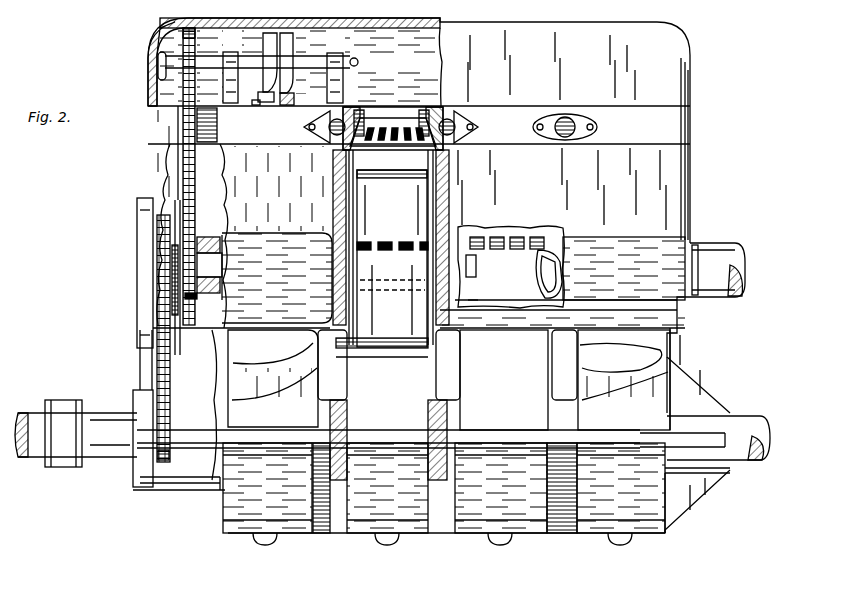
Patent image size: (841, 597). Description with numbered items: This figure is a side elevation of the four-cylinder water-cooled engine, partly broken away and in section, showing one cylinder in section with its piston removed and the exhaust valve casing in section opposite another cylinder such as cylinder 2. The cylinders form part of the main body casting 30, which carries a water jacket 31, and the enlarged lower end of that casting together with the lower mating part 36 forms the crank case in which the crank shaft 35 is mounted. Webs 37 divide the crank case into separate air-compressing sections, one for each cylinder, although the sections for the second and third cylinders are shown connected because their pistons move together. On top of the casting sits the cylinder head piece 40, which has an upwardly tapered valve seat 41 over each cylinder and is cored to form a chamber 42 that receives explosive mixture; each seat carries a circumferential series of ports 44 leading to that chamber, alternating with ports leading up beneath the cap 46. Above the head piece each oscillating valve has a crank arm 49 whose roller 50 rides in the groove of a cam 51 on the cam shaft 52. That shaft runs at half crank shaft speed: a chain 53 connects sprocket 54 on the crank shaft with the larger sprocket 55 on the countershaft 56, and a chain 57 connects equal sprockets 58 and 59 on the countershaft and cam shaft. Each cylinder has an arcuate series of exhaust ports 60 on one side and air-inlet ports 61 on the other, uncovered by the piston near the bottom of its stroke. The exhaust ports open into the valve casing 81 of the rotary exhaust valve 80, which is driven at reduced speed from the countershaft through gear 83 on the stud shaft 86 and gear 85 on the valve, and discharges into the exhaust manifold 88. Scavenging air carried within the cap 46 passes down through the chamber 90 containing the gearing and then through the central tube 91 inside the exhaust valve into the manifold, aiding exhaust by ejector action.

The cylinder 2 is at (392, 258).
The main body casting 30 is at (690, 183).
The water jacket 31 is at (452, 195).
The crank shaft 35 is at (738, 427).
The lower mating part 36 is at (650, 534).
The webs 37 is at (346, 376).
The cylinder head piece 40 is at (690, 139).
The valve seat 41 is at (405, 146).
The chamber 42 is at (422, 112).
The ports 44 is at (393, 135).
The cap 46 is at (692, 66).
The crank arm 49 is at (293, 100).
The roller 50 is at (262, 93).
The cam 51 is at (291, 52).
The cam shaft 52 is at (357, 64).
The chain 53 is at (169, 402).
The sprocket 54 is at (171, 459).
The sprocket 55 is at (158, 236).
The countershaft 56 is at (158, 264).
The chain 57 is at (193, 176).
The sprocket 58 is at (200, 238).
The sprocket 59 is at (190, 40).
The exhaust ports 60 is at (518, 230).
The air-inlet ports 61 is at (402, 251).
The exhaust valve 80 is at (470, 302).
The valve casing 81 is at (548, 252).
The gear 83 is at (200, 361).
The gear 85 is at (215, 240).
The stud shaft 86 is at (191, 303).
The exhaust manifold 88 is at (738, 280).
The chamber 90 is at (205, 110).
The central tube 91 is at (215, 262).